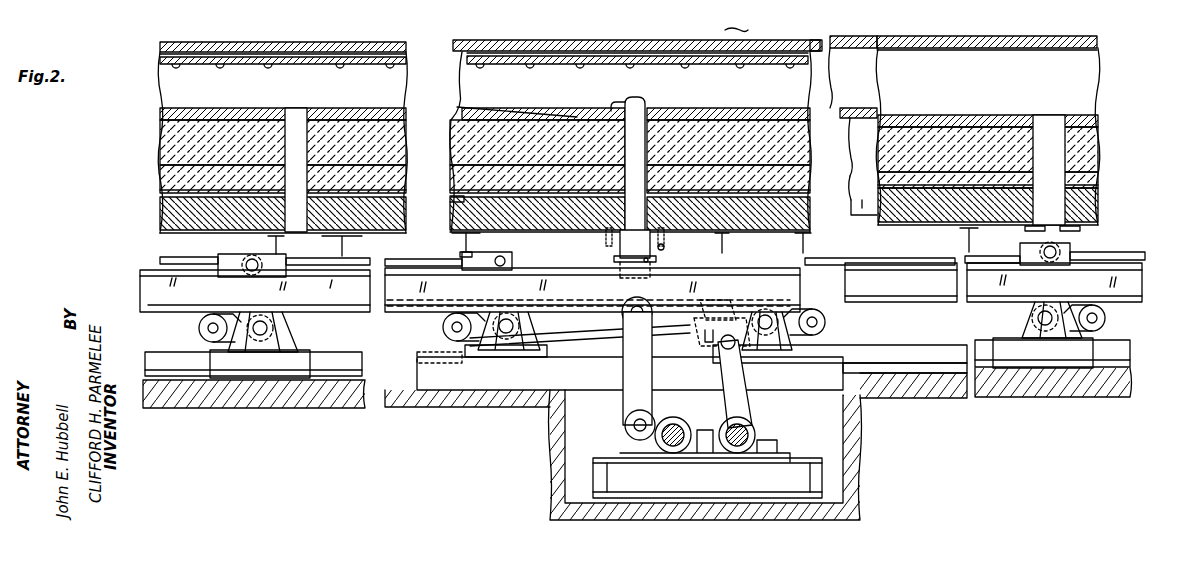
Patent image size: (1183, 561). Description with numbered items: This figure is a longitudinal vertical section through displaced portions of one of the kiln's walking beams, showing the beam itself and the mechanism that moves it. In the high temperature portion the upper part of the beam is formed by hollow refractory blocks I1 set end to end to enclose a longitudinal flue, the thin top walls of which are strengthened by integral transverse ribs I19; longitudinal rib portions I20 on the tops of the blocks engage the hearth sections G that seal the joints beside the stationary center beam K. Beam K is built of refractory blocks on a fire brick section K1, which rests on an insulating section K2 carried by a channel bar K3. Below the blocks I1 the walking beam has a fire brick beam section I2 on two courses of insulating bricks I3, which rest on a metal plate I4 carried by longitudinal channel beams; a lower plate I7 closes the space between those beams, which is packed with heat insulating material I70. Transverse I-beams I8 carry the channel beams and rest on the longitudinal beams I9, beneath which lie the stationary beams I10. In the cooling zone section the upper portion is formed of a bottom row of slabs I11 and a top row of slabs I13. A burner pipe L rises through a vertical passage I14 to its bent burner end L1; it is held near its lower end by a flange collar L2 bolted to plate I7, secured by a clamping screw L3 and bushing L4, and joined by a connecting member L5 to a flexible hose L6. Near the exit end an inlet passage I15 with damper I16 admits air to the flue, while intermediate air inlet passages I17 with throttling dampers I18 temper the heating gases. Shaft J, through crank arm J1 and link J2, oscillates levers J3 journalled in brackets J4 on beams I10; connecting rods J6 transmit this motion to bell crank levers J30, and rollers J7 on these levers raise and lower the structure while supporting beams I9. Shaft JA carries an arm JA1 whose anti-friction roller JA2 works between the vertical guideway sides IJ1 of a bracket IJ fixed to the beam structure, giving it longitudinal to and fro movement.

The hollow block I1 is at (508, 48).
The transverse rib I19 is at (607, 42).
The hearth section G is at (736, 18).
The longitudinal rib portion I20 is at (792, 40).
The slab I13 is at (977, 44).
The air inlet passage I17 is at (296, 125).
The insulating brick I3 is at (482, 184).
The beam section I2 is at (508, 124).
The burner end L1 is at (612, 98).
The burner pipe L is at (632, 120).
The vertical passage I14 is at (662, 126).
The stationary beam K is at (848, 82).
The slab I11 is at (972, 115).
The beam section K1 is at (862, 141).
The beam section K2 is at (860, 184).
The channel bar K3 is at (850, 212).
The inlet passage I15 is at (1060, 150).
The metal plate I4 is at (454, 200).
The metal plate I7 is at (462, 229).
The connecting rod J6 is at (190, 262).
The transverse I-beam I8 is at (473, 242).
The heat insulating material I70 is at (499, 258).
The flange collar L2 is at (608, 233).
The bushing L4 is at (616, 261).
The clamping screw L3 is at (665, 247).
The connecting member L5 is at (653, 262).
The longitudinal beam I9 is at (722, 264).
The damper I16 is at (1060, 230).
The bell crank lever J30 is at (248, 289).
The throttling damper I18 is at (305, 257).
The flexible hose L6 is at (616, 283).
The bracket IJ is at (692, 312).
The guideway side IJ1 is at (735, 288).
The roller J7 is at (197, 331).
The bracket J4 is at (302, 352).
The lever J3 is at (568, 324).
The anti-friction roller JA2 is at (718, 344).
The link J2 is at (623, 402).
The arm JA1 is at (746, 394).
The stationary beam I10 is at (822, 378).
The shaft JA is at (757, 440).
The crank arm J1 is at (650, 450).
The shaft J is at (675, 448).